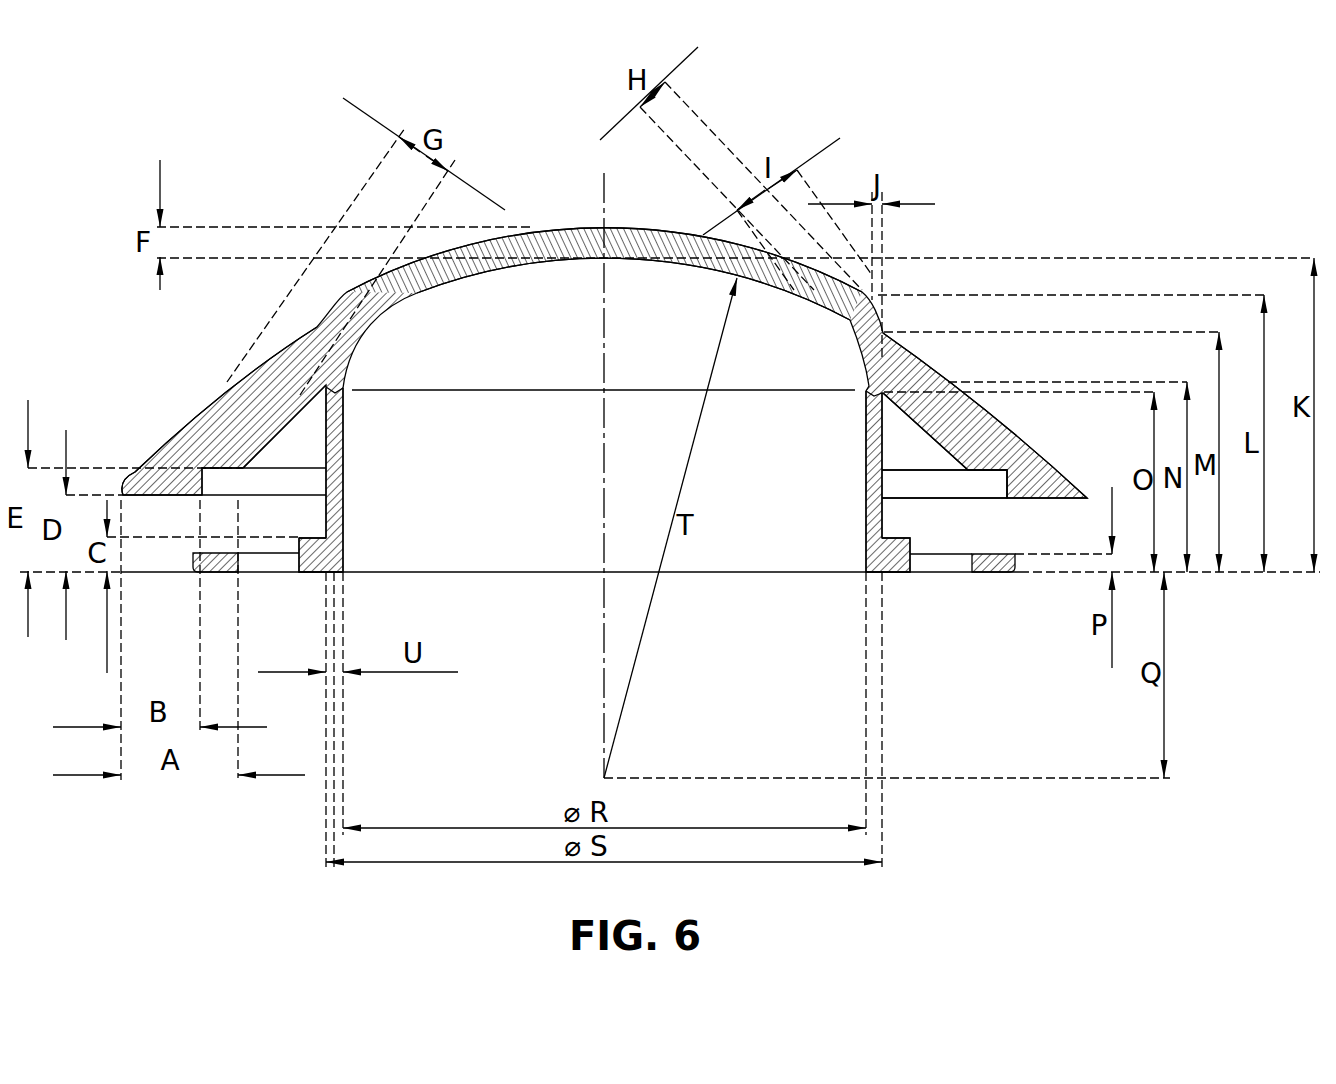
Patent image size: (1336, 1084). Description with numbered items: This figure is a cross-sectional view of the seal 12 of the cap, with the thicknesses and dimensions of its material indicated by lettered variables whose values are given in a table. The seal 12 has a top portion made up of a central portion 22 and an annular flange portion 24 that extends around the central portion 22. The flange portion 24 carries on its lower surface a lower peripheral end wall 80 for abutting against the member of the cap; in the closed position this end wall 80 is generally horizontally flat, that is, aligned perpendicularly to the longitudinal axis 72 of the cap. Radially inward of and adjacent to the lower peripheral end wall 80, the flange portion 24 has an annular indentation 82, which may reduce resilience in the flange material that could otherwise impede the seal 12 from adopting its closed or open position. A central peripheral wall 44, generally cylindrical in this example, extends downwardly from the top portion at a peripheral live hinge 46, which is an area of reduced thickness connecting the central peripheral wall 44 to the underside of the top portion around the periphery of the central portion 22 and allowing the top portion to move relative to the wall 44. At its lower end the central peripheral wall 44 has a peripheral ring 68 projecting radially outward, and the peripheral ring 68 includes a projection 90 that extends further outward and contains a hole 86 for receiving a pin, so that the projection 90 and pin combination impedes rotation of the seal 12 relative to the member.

The seal 12 is at (554, 319).
The central portion 22 is at (575, 227).
The annular flange portion 24 is at (213, 430).
The central peripheral wall 44 is at (344, 465).
The peripheral live hinge 46 is at (340, 382).
The peripheral ring 68 is at (315, 557).
The longitudinal axis 72 is at (606, 206).
The lower peripheral end wall 80 is at (1042, 500).
The annular indentation 82 is at (1006, 483).
The hole 86 is at (270, 563).
The projection 90 is at (213, 565).